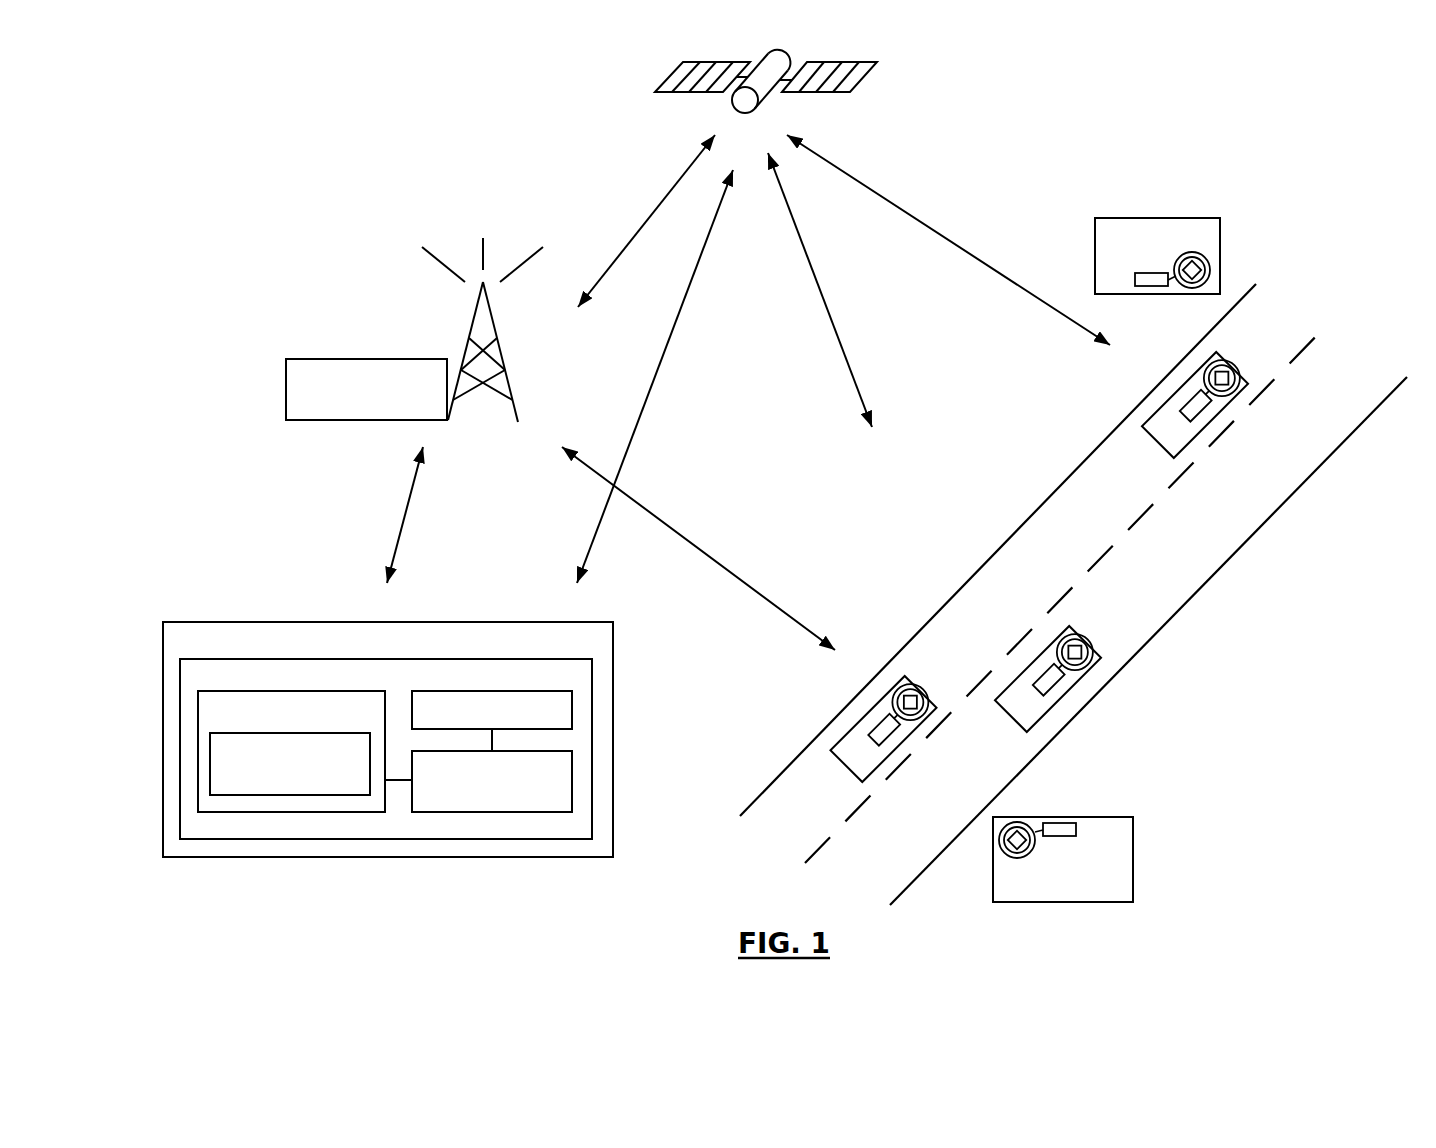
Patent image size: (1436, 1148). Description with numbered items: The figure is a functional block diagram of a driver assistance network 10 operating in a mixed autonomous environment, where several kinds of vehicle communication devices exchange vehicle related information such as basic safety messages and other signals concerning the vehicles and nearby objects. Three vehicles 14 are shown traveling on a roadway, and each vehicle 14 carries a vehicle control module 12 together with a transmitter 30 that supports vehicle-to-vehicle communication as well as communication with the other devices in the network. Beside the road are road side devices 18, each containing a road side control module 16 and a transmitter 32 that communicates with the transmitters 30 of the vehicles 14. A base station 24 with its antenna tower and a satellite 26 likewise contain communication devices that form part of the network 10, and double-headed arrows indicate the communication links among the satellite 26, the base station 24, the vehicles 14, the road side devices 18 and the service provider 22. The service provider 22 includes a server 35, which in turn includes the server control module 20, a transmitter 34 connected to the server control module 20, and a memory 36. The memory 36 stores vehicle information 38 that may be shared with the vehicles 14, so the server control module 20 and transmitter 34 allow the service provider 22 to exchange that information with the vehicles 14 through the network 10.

The driver assistance network 10 is at (348, 129).
The vehicle control module 12 is at (1198, 413).
The vehicle 14 is at (1170, 393).
The road side control module 16 is at (1152, 287).
The road side device 18 is at (1220, 222).
The server control module 20 is at (572, 773).
The service provider 22 is at (232, 622).
The base station 24 is at (365, 360).
The satellite 26 is at (877, 62).
The transmitter 30 is at (1242, 383).
The transmitter 32 is at (1196, 265).
The transmitter 34 is at (572, 705).
The server 35 is at (240, 659).
The memory 36 is at (270, 691).
The vehicle information 38 is at (297, 797).